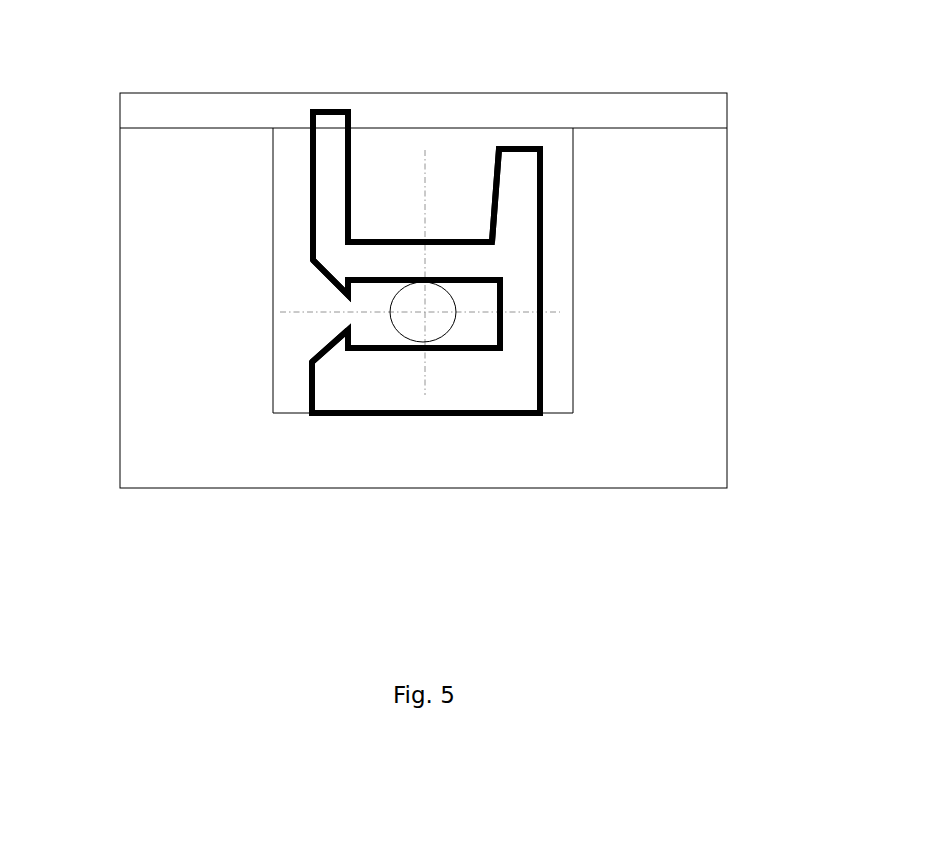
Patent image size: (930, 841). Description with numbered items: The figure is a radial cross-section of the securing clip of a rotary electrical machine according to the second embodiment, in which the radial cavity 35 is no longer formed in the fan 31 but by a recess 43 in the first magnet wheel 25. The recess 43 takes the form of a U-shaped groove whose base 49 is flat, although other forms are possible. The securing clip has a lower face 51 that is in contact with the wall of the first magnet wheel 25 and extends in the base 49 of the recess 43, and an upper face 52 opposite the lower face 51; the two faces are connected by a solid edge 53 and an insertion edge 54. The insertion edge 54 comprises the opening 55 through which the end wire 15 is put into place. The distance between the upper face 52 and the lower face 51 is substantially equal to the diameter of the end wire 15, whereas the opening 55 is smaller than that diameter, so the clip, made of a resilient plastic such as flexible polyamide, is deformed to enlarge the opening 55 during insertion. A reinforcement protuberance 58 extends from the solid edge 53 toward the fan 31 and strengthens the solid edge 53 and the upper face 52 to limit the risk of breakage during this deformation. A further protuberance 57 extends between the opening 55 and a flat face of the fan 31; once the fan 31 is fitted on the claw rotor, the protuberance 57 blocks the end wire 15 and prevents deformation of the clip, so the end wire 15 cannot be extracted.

The end wire 15 is at (413, 330).
The first magnet wheel 25 is at (135, 365).
The fan 31 is at (135, 108).
The radial cavity 35 is at (690, 270).
The recess 43 is at (550, 381).
The base of the recess 49 is at (284, 412).
The lower face 51 is at (500, 373).
The upper face 52 is at (448, 258).
The solid edge 53 is at (520, 330).
The insertion edge 54 is at (325, 385).
The opening 55 is at (328, 320).
The protuberance 57 is at (338, 142).
The reinforcement protuberance 58 is at (520, 160).